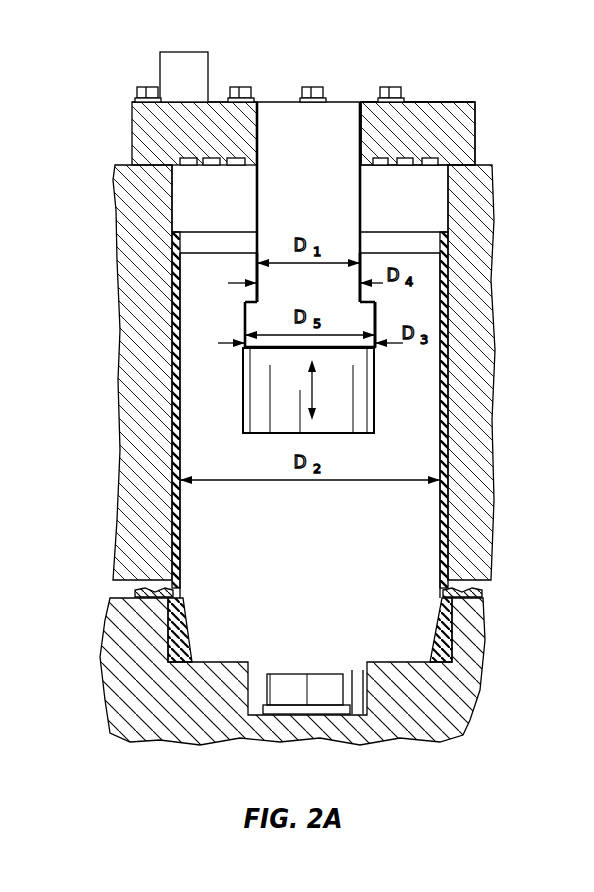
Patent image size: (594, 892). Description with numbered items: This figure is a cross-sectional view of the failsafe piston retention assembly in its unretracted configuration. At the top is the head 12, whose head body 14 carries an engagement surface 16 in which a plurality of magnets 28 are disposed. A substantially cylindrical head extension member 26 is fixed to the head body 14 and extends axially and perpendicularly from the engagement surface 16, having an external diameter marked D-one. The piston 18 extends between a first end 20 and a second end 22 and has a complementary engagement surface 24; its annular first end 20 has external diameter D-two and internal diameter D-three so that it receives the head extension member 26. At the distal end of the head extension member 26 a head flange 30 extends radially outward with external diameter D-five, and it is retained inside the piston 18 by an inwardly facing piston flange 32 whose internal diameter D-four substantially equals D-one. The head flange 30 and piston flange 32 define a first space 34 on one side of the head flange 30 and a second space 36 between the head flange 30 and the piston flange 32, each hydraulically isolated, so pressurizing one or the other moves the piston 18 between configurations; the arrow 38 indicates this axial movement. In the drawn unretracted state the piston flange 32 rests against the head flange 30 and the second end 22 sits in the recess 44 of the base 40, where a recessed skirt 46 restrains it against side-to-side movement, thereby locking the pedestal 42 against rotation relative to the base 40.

The head 12 is at (339, 112).
The head body 14 is at (432, 115).
The engagement surface 16 is at (392, 165).
The piston 18 is at (410, 520).
The first end 20 is at (425, 285).
The second end 22 is at (415, 647).
The complementary engagement surface 24 is at (400, 253).
The head extension member 26 is at (332, 127).
The magnets 28 is at (183, 158).
The head flange 30 is at (250, 327).
The piston flange 32 is at (248, 272).
The first space 34 is at (263, 390).
The second space 36 is at (257, 305).
The edges 38 is at (345, 380).
The base 40 is at (133, 635).
The pedestal 42 is at (143, 202).
The recess 44 is at (215, 662).
The recessed skirt 46 is at (443, 630).